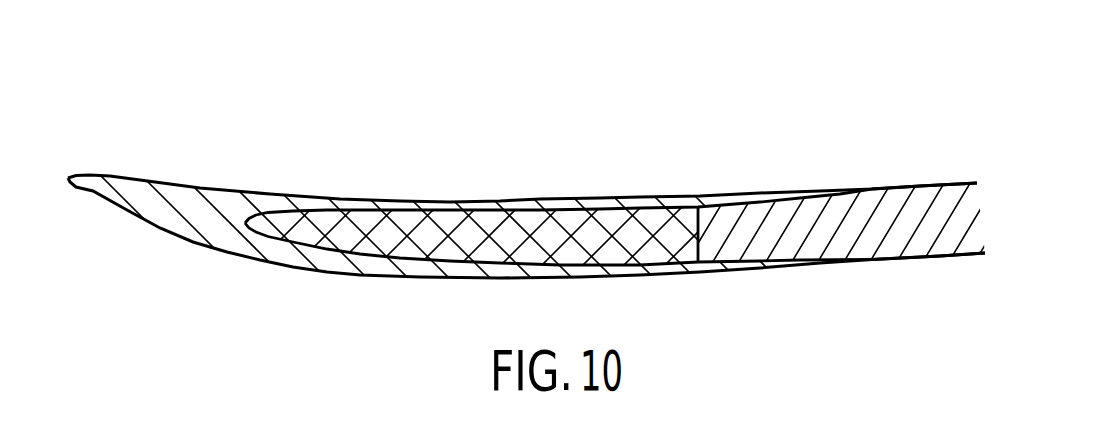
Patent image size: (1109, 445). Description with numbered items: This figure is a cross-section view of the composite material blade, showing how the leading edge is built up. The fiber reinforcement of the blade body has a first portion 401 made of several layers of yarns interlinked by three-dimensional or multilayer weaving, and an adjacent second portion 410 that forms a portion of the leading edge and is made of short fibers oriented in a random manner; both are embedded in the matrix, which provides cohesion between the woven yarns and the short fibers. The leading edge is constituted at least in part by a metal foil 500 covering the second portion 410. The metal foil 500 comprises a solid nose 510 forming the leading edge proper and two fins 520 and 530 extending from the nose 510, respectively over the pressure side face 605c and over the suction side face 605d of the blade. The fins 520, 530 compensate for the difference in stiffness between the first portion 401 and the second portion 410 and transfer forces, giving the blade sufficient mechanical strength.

The metal foil 500 is at (273, 158).
The solid nose 510 is at (157, 210).
The fin 520 is at (412, 200).
The fin 530 is at (415, 280).
The second portion 410 is at (580, 220).
The first portion 401 is at (803, 222).
The pressure side face 605c is at (908, 183).
The suction side face 605d is at (935, 258).